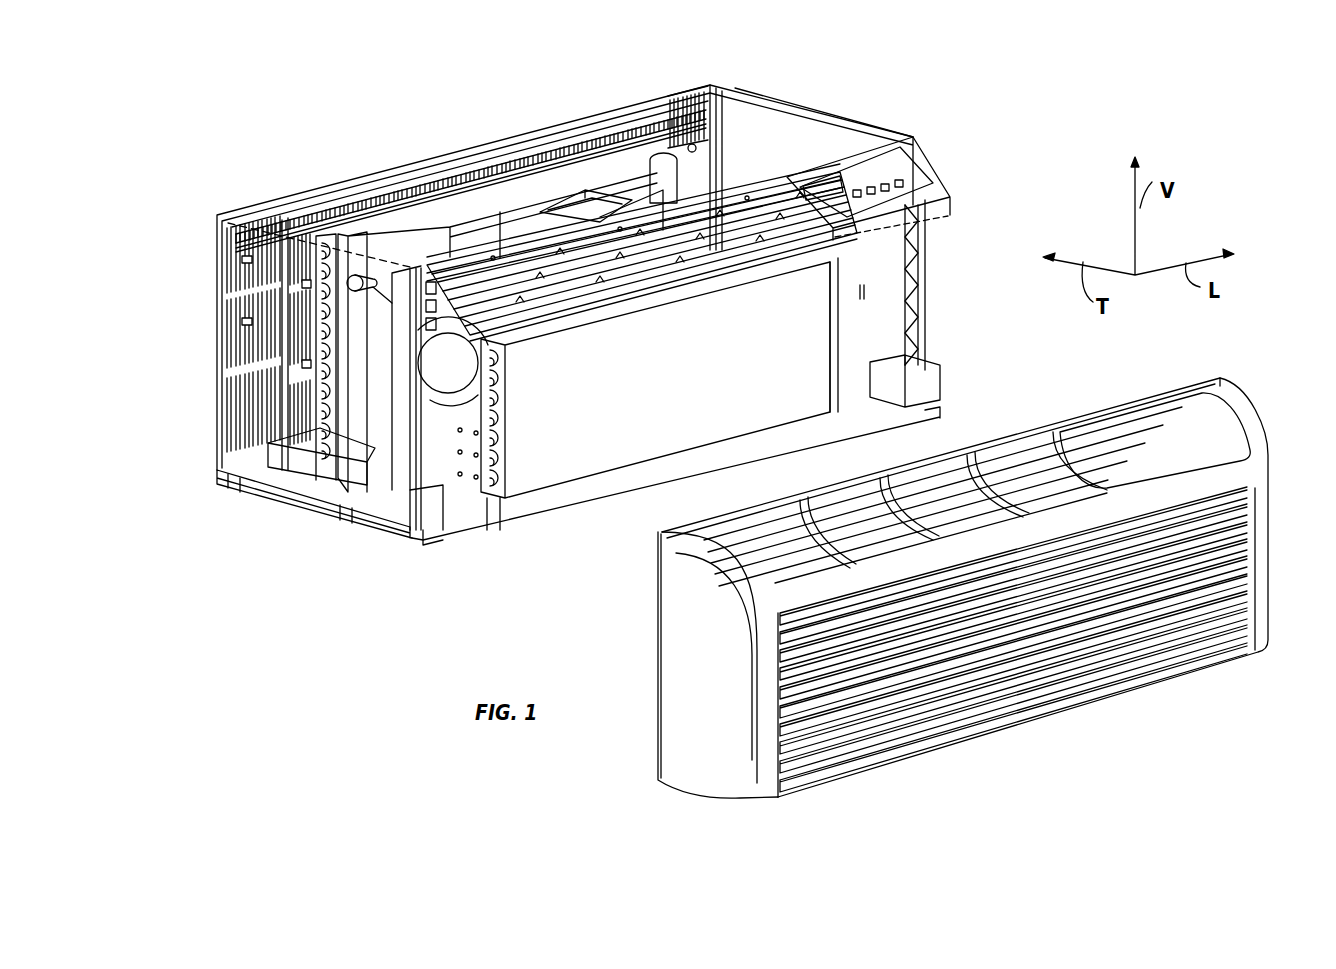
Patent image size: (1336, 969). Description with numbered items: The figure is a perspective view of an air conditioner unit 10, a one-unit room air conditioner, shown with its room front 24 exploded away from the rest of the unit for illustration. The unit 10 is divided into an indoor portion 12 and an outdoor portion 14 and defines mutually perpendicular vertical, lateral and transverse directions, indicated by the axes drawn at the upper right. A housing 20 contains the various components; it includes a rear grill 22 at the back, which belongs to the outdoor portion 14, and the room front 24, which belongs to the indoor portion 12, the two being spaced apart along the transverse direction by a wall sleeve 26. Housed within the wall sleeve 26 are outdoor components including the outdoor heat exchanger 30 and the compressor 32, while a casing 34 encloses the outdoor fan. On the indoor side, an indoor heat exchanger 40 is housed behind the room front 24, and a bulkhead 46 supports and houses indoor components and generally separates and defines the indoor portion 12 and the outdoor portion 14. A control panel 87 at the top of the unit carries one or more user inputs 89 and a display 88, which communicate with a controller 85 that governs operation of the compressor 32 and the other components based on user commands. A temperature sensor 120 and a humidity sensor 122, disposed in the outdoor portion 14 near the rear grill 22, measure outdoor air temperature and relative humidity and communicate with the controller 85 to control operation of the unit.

The air conditioner unit 10 is at (1048, 146).
The indoor portion 12 is at (465, 536).
The outdoor portion 14 is at (312, 511).
The housing 20 is at (892, 122).
The rear grill 22 is at (530, 128).
The room front 24 is at (1243, 461).
The wall sleeve 26 is at (793, 122).
The outdoor heat exchanger 30 is at (317, 387).
The compressor 32 is at (713, 135).
The casing 34 is at (463, 215).
The indoor heat exchanger 40 is at (540, 465).
The bulkhead 46 is at (413, 448).
The controller 85 is at (953, 212).
The control panel 87 is at (922, 184).
The display 88 is at (843, 185).
The user inputs 89 is at (905, 177).
The temperature sensor 120 is at (243, 260).
The humidity sensor 122 is at (243, 322).